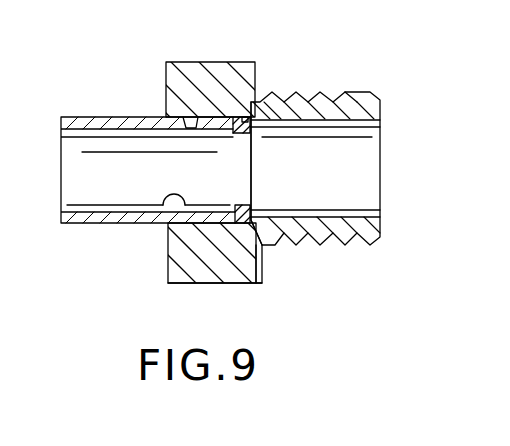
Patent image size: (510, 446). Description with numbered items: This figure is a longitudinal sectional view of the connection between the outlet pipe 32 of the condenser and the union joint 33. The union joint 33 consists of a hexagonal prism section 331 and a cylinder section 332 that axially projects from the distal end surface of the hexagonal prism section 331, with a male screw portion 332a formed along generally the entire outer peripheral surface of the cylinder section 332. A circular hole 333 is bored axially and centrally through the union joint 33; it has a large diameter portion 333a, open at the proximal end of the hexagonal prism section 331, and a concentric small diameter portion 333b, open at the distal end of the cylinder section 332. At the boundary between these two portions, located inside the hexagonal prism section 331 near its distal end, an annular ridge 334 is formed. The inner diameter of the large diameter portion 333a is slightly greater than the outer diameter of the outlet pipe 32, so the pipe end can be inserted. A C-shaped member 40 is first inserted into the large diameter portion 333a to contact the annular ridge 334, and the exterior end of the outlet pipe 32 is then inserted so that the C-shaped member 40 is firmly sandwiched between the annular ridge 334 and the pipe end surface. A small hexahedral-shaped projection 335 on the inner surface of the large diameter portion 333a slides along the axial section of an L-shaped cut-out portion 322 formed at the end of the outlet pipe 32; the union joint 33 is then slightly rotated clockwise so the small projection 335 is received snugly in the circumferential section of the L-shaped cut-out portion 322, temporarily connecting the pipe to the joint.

The outlet pipe 32 is at (80, 221).
The L-shaped cut-out portion 322 is at (197, 131).
The union joint 33 is at (240, 289).
The hexagonal prism section 331 is at (188, 284).
The cylinder section 332 is at (357, 244).
The male screw portion 332a is at (331, 93).
The circular hole 333 is at (293, 211).
The large diameter portion 333a is at (162, 213).
The small diameter portion 333b is at (328, 208).
The annular ridge 334 is at (259, 228).
The small projection 335 is at (192, 126).
The C-shaped member 40 is at (240, 116).